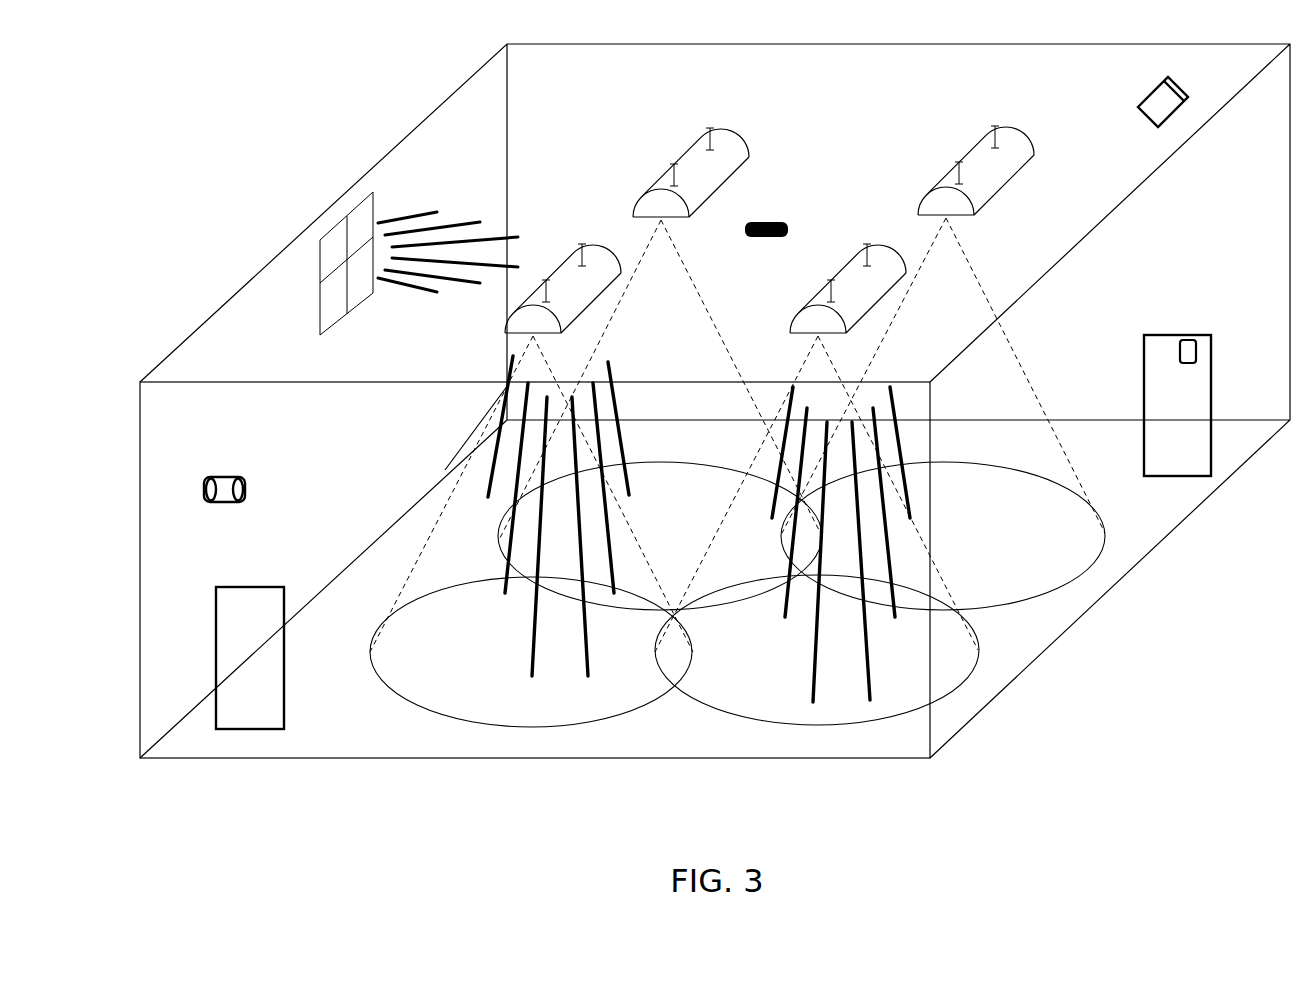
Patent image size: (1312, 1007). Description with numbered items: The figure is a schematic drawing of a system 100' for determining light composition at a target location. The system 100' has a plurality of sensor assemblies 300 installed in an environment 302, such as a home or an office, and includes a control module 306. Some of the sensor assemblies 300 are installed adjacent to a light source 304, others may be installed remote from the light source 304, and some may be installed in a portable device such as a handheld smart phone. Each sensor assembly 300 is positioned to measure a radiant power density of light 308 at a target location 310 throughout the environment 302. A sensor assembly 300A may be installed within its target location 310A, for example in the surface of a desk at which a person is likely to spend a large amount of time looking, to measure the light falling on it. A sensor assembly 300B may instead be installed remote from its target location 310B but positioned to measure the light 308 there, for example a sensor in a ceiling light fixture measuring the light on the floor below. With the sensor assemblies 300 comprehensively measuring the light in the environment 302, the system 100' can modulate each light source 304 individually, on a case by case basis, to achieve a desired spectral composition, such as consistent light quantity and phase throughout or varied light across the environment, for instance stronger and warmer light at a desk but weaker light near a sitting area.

The system 100' is at (760, 41).
The environment 302 is at (440, 142).
The light source 304 is at (570, 267).
The control module 306 is at (775, 220).
The sensor assembly 300 is at (222, 475).
The sensor assembly 300A is at (1198, 351).
The sensor assembly 300B is at (533, 337).
The light 308 is at (528, 628).
The target location 310 is at (270, 587).
The target location 310A is at (1153, 335).
The target location 310B is at (395, 688).